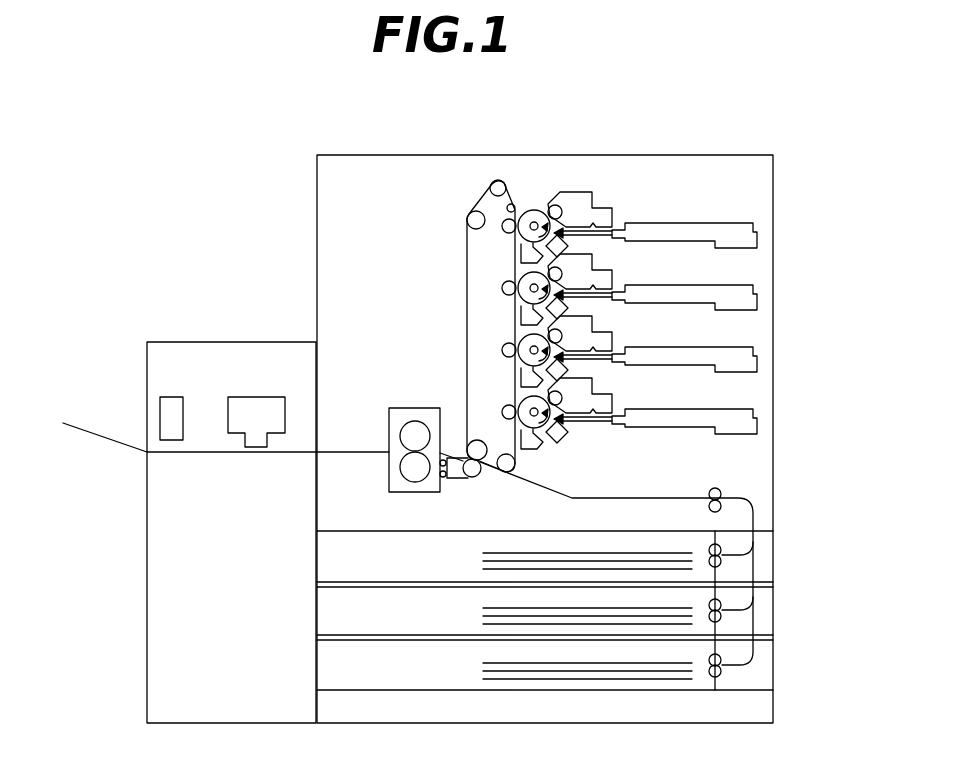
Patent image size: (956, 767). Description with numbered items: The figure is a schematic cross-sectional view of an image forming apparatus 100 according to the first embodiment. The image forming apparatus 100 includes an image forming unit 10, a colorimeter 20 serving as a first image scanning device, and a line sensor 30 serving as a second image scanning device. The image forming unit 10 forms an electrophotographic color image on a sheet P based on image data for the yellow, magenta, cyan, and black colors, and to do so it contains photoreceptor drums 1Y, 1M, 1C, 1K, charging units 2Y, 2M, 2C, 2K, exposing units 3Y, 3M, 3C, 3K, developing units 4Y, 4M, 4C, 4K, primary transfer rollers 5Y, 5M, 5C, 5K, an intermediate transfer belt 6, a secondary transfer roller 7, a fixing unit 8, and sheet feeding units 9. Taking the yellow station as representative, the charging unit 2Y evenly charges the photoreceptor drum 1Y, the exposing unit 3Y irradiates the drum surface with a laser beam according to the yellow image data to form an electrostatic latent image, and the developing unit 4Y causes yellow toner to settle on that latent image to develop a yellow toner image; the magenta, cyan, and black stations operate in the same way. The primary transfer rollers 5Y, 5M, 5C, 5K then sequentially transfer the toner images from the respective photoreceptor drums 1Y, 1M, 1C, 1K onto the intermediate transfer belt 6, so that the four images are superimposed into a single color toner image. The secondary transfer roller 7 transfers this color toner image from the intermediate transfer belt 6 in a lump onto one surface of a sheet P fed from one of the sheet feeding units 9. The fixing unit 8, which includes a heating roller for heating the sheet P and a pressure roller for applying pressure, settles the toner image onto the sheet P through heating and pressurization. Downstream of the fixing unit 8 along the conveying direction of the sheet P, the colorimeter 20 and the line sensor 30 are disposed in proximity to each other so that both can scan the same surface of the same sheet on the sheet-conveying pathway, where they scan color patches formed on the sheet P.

The image forming apparatus 100 is at (336, 140).
The image forming unit 10 is at (718, 156).
The colorimeter 20 is at (172, 397).
The line sensor 30 is at (258, 397).
The photoreceptor drum 1Y is at (538, 212).
The photoreceptor drum 1M is at (525, 275).
The photoreceptor drum 1C is at (525, 335).
The photoreceptor drum 1K is at (525, 397).
The charging unit 2Y is at (560, 238).
The charging unit 2M is at (560, 300).
The charging unit 2C is at (560, 364).
The charging unit 2K is at (560, 424).
The exposing unit 3Y is at (715, 223).
The exposing unit 3M is at (715, 285).
The exposing unit 3C is at (715, 347).
The exposing unit 3K is at (715, 409).
The developing unit 4Y is at (612, 212).
The developing unit 4M is at (612, 287).
The developing unit 4C is at (612, 347).
The developing unit 4K is at (612, 409).
The primary transfer roller 5Y is at (503, 223).
The primary transfer roller 5M is at (503, 285).
The primary transfer roller 5C is at (503, 348).
The primary transfer roller 5K is at (503, 410).
The intermediate transfer belt 6 is at (467, 250).
The secondary transfer roller 7 is at (479, 476).
The fixing unit 8 is at (389, 428).
The sheet feeding unit 9 is at (772, 562).
The sheet P is at (483, 553).